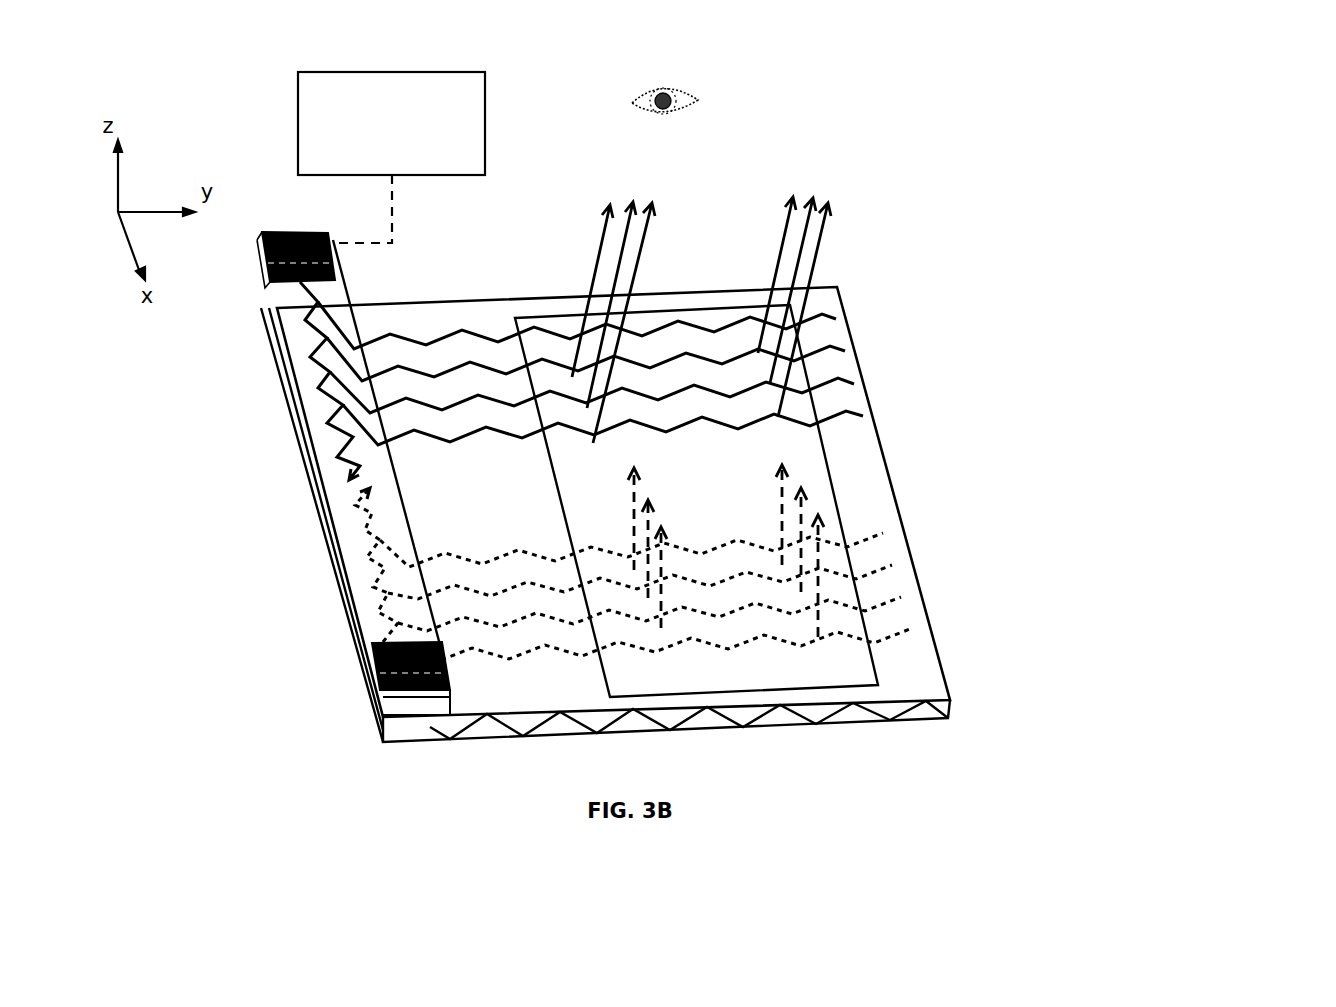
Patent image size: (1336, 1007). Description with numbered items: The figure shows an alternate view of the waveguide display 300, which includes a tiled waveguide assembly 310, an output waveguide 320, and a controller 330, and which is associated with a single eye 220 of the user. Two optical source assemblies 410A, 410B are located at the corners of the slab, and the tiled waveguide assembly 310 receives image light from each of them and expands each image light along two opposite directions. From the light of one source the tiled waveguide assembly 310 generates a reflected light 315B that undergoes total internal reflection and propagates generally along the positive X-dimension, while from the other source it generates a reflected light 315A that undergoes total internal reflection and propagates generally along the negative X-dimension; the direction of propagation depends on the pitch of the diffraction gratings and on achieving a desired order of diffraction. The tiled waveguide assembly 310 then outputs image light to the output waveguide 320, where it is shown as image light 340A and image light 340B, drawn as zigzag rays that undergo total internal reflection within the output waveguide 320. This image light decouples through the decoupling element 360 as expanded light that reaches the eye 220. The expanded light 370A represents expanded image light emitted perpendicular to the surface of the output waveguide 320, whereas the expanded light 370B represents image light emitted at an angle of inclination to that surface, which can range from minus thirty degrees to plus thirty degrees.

The waveguide display 300 is at (118, 55).
The controller 330 is at (373, 148).
The eye 220 is at (636, 163).
The output waveguide 320 is at (928, 612).
The tiled waveguide assembly 310 is at (405, 710).
The decoupling element 360 is at (830, 463).
The optical source assembly 410B is at (275, 278).
The optical source assembly 410A is at (377, 667).
The reflected light 315B is at (348, 458).
The reflected light 315A is at (366, 522).
The image light 340B is at (850, 383).
The image light 340A is at (888, 638).
The expanded light 370B is at (813, 263).
The expanded light 370A is at (793, 492).